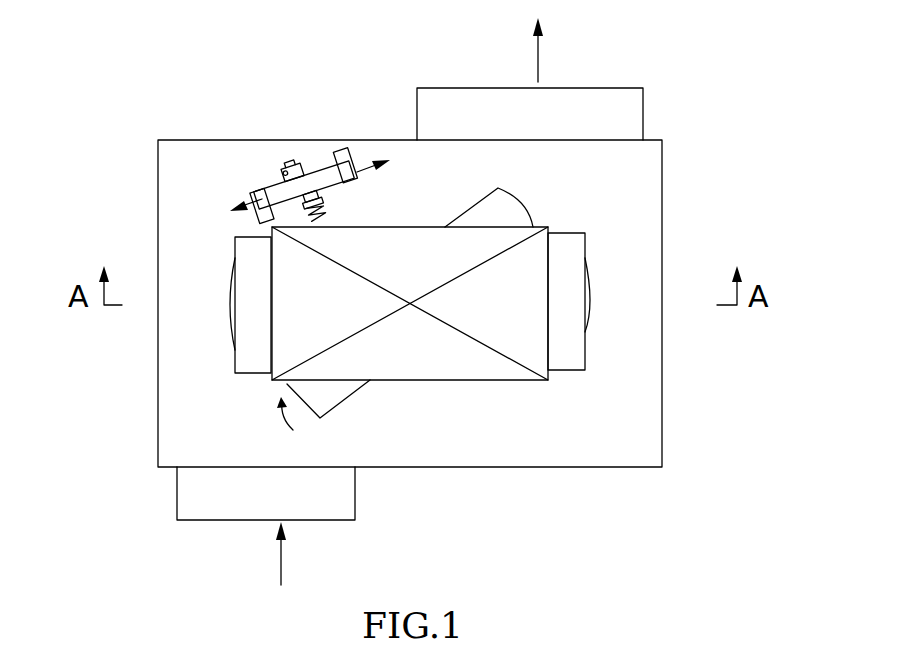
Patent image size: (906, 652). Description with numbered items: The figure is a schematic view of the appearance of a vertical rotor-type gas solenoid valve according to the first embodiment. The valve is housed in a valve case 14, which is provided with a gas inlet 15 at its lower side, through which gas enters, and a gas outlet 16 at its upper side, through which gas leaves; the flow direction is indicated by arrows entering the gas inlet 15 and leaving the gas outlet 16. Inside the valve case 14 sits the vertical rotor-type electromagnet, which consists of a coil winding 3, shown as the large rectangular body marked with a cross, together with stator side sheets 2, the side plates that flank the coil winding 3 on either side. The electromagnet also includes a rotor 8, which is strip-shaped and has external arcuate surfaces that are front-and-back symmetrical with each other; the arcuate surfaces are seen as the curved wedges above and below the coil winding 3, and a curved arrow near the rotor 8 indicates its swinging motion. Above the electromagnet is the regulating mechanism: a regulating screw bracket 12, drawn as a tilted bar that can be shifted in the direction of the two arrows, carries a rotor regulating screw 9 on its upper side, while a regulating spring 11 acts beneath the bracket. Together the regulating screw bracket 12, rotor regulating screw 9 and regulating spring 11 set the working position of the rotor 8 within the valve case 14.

The stator side sheets 2 is at (251, 357).
The coil winding 3 is at (284, 371).
The rotor 8 is at (315, 392).
The rotor regulating screw 9 is at (291, 166).
The regulating spring 11 is at (318, 213).
The regulating screw bracket 12 is at (263, 198).
The valve case 14 is at (614, 215).
The gas inlet 15 is at (310, 520).
The gas outlet 16 is at (598, 88).